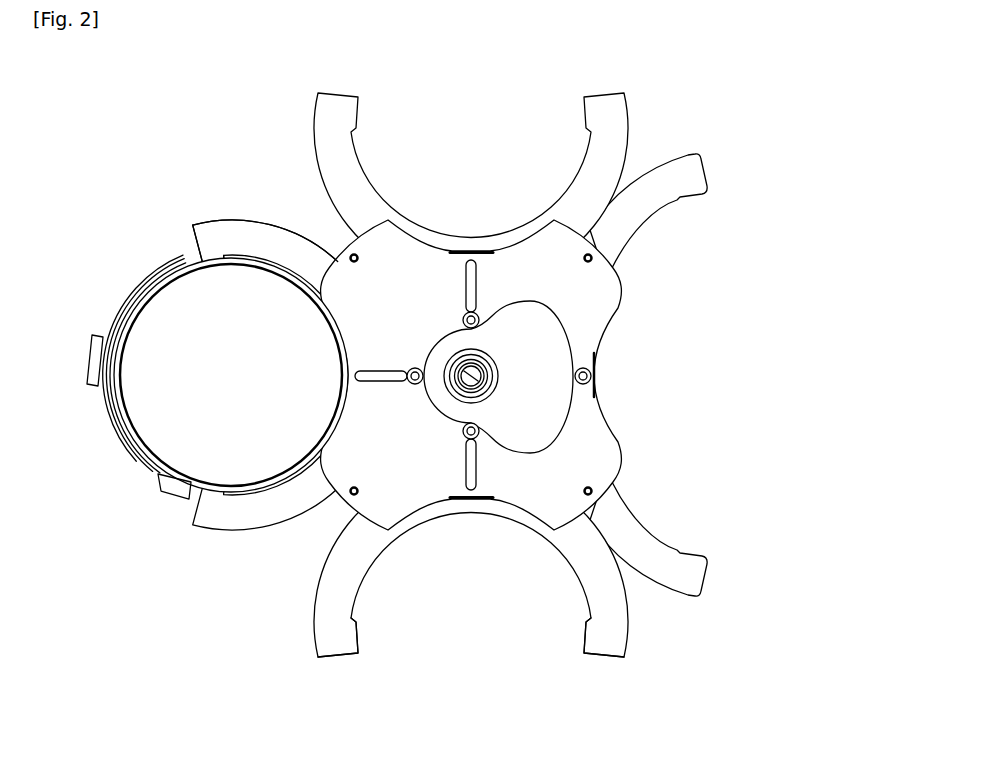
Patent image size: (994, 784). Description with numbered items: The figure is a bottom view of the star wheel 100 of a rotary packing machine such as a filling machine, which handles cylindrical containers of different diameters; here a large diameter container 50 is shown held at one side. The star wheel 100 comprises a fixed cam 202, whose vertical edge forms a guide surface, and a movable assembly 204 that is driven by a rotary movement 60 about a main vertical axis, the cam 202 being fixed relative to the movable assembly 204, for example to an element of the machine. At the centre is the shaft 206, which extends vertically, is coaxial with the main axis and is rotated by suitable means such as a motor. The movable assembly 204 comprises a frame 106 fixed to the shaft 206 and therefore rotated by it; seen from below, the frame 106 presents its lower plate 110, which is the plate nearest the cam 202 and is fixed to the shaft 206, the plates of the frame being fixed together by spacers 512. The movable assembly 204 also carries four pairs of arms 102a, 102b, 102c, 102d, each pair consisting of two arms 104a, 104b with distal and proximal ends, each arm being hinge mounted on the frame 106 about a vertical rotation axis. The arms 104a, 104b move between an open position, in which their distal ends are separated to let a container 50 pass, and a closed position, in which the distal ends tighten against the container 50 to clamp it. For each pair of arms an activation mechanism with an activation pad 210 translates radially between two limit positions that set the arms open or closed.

The large diameter container 50 is at (222, 390).
The rotary movement 60 is at (397, 384).
The star wheel 100 is at (408, 400).
The pair of arms 102a is at (508, 628).
The pair of arms 102b is at (101, 481).
The pair of arms 102c is at (447, 165).
The pair of arms 102d is at (665, 361).
The arm 104a is at (605, 635).
The arm 104b is at (342, 638).
The frame 106 is at (215, 197).
The lower plate 110 is at (403, 490).
The cam 202 is at (560, 390).
The movable assembly 204 is at (263, 177).
The shaft 206 is at (452, 365).
The activation pad 210 is at (583, 383).
The spacer 512 is at (353, 500).